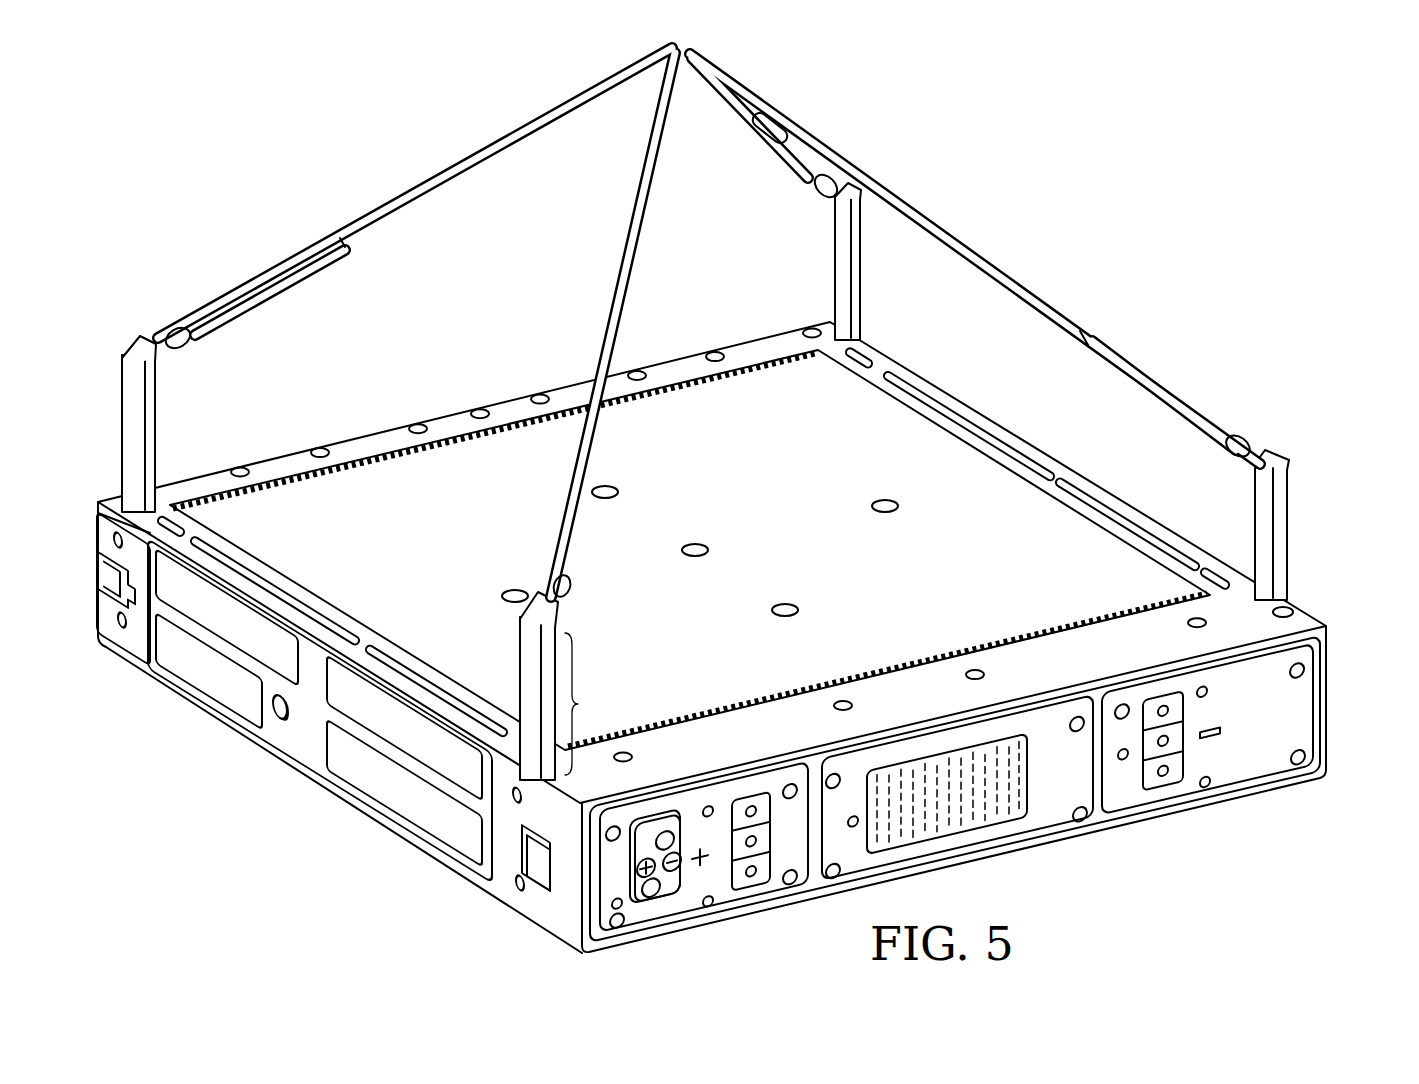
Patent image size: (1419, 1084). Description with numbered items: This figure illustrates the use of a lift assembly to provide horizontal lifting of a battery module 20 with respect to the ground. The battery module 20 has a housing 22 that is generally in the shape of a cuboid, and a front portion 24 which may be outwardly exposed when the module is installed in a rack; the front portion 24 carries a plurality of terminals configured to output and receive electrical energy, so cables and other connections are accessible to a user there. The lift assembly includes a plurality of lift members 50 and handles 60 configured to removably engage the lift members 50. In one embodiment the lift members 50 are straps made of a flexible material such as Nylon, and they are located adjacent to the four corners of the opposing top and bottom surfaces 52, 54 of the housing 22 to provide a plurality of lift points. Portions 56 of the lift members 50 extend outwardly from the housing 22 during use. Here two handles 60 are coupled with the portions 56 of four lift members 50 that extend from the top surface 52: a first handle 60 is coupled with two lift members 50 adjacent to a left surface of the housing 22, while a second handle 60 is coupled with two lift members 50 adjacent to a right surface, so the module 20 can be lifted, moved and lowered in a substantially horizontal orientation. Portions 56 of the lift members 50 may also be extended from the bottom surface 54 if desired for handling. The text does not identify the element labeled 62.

The battery module 20 is at (1042, 424).
The housing 22 is at (228, 733).
The front portion 24 is at (1332, 702).
The lift member 50 is at (520, 736).
The top surface 52 is at (1007, 589).
The bottom surface 54 is at (1260, 802).
The portion 56 is at (590, 704).
The handle 60 is at (420, 178).
The strap link 62 is at (198, 360).